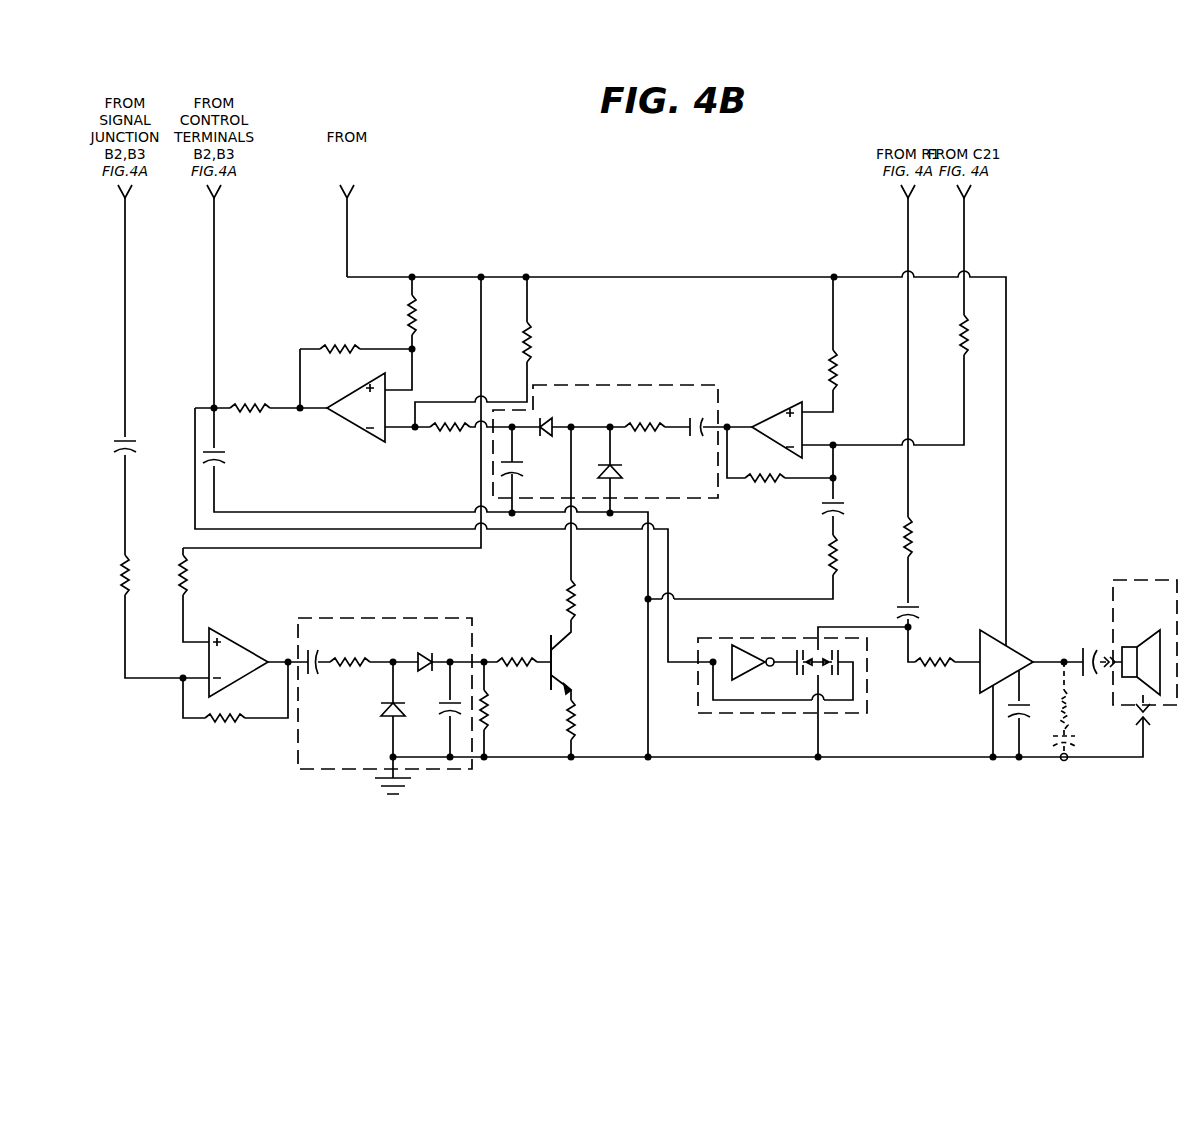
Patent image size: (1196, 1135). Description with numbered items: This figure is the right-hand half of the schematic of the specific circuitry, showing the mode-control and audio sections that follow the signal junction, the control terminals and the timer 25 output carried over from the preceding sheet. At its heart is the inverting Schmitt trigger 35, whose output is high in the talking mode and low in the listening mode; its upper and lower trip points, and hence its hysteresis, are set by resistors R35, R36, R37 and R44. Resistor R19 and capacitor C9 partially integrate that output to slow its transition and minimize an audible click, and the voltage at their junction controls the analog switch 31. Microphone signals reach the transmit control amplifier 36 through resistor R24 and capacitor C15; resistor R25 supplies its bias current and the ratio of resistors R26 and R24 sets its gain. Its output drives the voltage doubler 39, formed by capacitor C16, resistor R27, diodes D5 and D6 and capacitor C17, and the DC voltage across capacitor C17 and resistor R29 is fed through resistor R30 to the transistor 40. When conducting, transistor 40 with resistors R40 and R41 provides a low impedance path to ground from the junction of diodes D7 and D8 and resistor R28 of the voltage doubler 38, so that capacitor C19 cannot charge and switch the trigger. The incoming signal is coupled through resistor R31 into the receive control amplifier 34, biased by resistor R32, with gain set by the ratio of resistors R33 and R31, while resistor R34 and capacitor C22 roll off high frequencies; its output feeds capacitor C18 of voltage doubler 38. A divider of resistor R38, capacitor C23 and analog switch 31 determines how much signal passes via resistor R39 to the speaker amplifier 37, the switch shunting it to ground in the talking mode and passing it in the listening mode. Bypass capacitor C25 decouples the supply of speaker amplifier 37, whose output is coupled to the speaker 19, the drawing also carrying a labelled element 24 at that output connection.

The speaker 19 is at (1150, 631).
The connector 24 is at (1079, 647).
The timer 25 is at (346, 211).
The analog switch 31 is at (757, 716).
The receive control amplifier 34 is at (790, 436).
The inverting Schmitt trigger 35 is at (366, 418).
The transmit control amplifier 36 is at (240, 672).
The speaker amplifier 37 is at (1019, 640).
The voltage doubler 38 is at (656, 382).
The voltage doubler 39 is at (410, 616).
The transistor 40 is at (570, 647).
The capacitor C15 is at (116, 458).
The capacitor C9 is at (232, 460).
The resistor R19 is at (250, 397).
The resistor R37 is at (340, 338).
The resistor R35 is at (432, 315).
The resistor R44 is at (547, 342).
The resistor R36 is at (450, 438).
The diode D8 is at (542, 420).
The capacitor C19 is at (521, 476).
The diode D7 is at (617, 473).
The resistor R28 is at (645, 438).
The capacitor C18 is at (700, 442).
The resistor R32 is at (838, 366).
The resistor R31 is at (980, 331).
The capacitor C22 is at (840, 500).
The resistor R33 is at (760, 487).
The resistor R34 is at (838, 549).
The resistor R38 is at (915, 534).
The capacitor C23 is at (917, 604).
The resistor R39 is at (935, 675).
The bypass capacitor C25 is at (1035, 696).
The resistor R24 is at (122, 578).
The resistor R25 is at (188, 578).
The resistor R26 is at (232, 722).
The capacitor C16 is at (325, 680).
The resistor R27 is at (350, 649).
The diode D6 is at (442, 653).
The diode D5 is at (386, 702).
The capacitor C17 is at (446, 704).
The resistor R29 is at (488, 699).
The resistor R30 is at (522, 658).
The resistor R41 is at (589, 595).
The resistor R40 is at (576, 705).